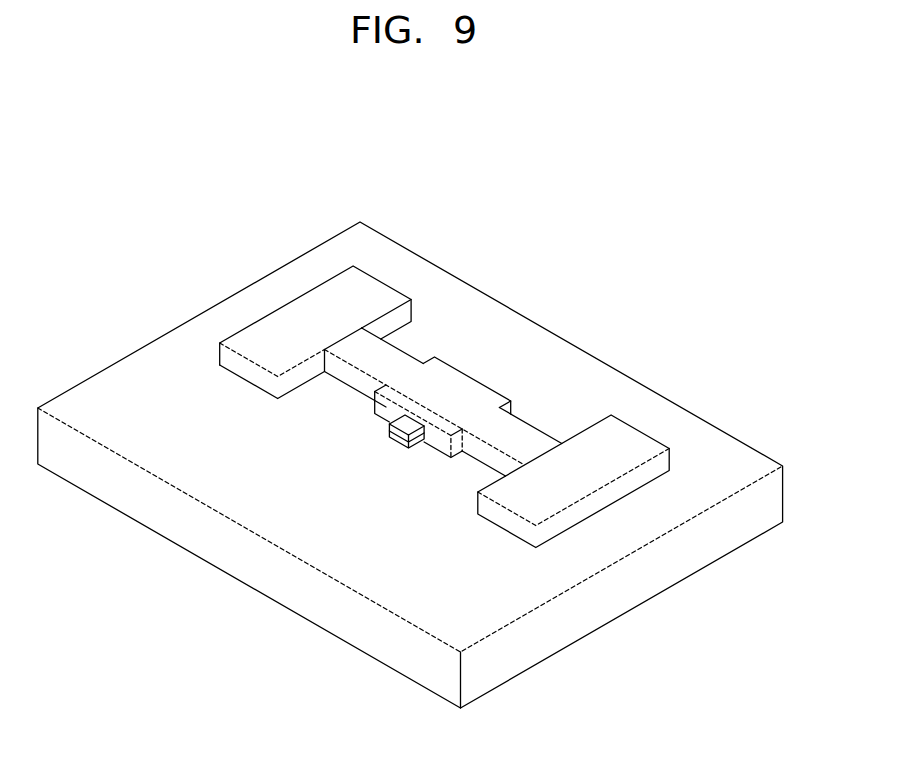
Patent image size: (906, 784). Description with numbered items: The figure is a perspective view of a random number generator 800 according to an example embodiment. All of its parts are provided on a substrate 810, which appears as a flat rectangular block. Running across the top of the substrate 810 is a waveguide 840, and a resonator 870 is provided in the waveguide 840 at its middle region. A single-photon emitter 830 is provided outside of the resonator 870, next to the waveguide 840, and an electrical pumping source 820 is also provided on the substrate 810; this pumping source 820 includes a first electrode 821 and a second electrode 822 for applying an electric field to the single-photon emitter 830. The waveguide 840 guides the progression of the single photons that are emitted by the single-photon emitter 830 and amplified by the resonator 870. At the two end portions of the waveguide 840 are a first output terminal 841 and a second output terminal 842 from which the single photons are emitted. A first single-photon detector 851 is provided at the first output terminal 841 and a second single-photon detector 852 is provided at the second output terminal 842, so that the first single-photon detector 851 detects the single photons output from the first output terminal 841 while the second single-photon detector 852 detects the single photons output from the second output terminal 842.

The random number generator 800 is at (668, 262).
The substrate 810 is at (619, 607).
The electrical pumping source 820 is at (407, 434).
The first electrode 821 is at (389, 426).
The second electrode 822 is at (422, 430).
The single-photon emitter 830 is at (408, 421).
The waveguide 840 is at (399, 347).
The first output terminal 841 is at (343, 335).
The second output terminal 842 is at (545, 455).
The first single-photon detector 851 is at (336, 298).
The second single-photon detector 852 is at (595, 448).
The resonator 870 is at (487, 391).